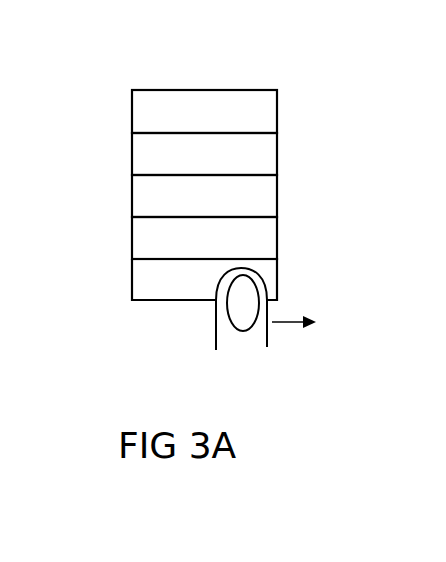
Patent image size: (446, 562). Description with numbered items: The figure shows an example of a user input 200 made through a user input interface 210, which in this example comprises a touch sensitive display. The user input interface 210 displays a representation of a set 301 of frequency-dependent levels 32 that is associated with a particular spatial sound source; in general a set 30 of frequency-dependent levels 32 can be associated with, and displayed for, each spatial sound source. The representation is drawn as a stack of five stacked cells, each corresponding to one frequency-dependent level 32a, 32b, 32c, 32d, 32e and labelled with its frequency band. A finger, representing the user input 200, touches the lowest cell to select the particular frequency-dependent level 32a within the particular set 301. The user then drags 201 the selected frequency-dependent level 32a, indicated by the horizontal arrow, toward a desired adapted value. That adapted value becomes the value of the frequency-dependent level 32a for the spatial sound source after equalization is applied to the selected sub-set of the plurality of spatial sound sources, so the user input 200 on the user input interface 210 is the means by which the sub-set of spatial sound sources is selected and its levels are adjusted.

The user input interface 210 is at (133, 64).
The set of frequency-dependent levels 301 is at (196, 90).
The set of frequency-dependent levels 30 is at (160, 166).
The frequency-dependent levels 32 is at (160, 197).
The frequency-dependent level 32a is at (131, 288).
The frequency-dependent level 32b is at (131, 241).
The frequency-dependent level 32c is at (131, 193).
The frequency-dependent level 32d is at (131, 150).
The frequency-dependent level 32e is at (131, 110).
The user input 200 is at (216, 336).
The drag 201 is at (291, 322).